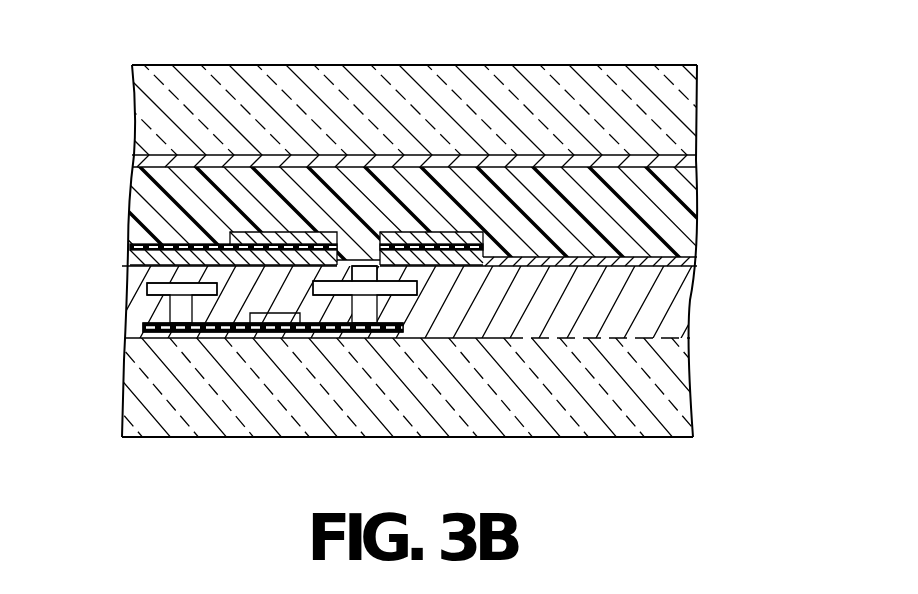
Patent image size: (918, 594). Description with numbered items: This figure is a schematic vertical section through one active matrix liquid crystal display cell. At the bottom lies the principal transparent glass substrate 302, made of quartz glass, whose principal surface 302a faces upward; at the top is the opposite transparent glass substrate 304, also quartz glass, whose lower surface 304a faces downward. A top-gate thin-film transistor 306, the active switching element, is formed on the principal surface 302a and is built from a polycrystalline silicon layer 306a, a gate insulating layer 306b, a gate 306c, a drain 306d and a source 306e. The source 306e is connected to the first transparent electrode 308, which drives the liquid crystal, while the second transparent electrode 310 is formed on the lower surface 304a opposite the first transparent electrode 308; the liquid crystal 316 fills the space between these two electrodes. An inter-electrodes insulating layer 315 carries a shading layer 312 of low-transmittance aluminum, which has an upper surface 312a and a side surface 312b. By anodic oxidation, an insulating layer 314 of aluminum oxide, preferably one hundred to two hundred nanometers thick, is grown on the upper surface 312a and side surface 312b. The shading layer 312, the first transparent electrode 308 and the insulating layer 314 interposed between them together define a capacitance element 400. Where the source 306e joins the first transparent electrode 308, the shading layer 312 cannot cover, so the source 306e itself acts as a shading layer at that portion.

The principal transparent glass substrate 302 is at (538, 416).
The principal surface 302a is at (640, 338).
The opposite transparent glass substrate 304 is at (560, 76).
The lower surface 304a is at (648, 160).
The thin-film transistor 306 is at (224, 304).
The polycrystalline silicon layer 306a is at (175, 334).
The gate insulating layer 306b is at (228, 334).
The gate 306c is at (277, 326).
The drain 306d is at (168, 303).
The source 306e is at (372, 334).
The first transparent electrode 308 is at (697, 262).
The second transparent electrode 310 is at (134, 158).
The shading layer 312 is at (133, 256).
The upper surface 312a is at (438, 247).
The side surface 312b is at (432, 258).
The insulating layer 314 is at (160, 240).
The inter-electrodes insulating layer 315 is at (670, 306).
The liquid crystal 316 is at (678, 190).
The capacitance element 400 is at (290, 250).